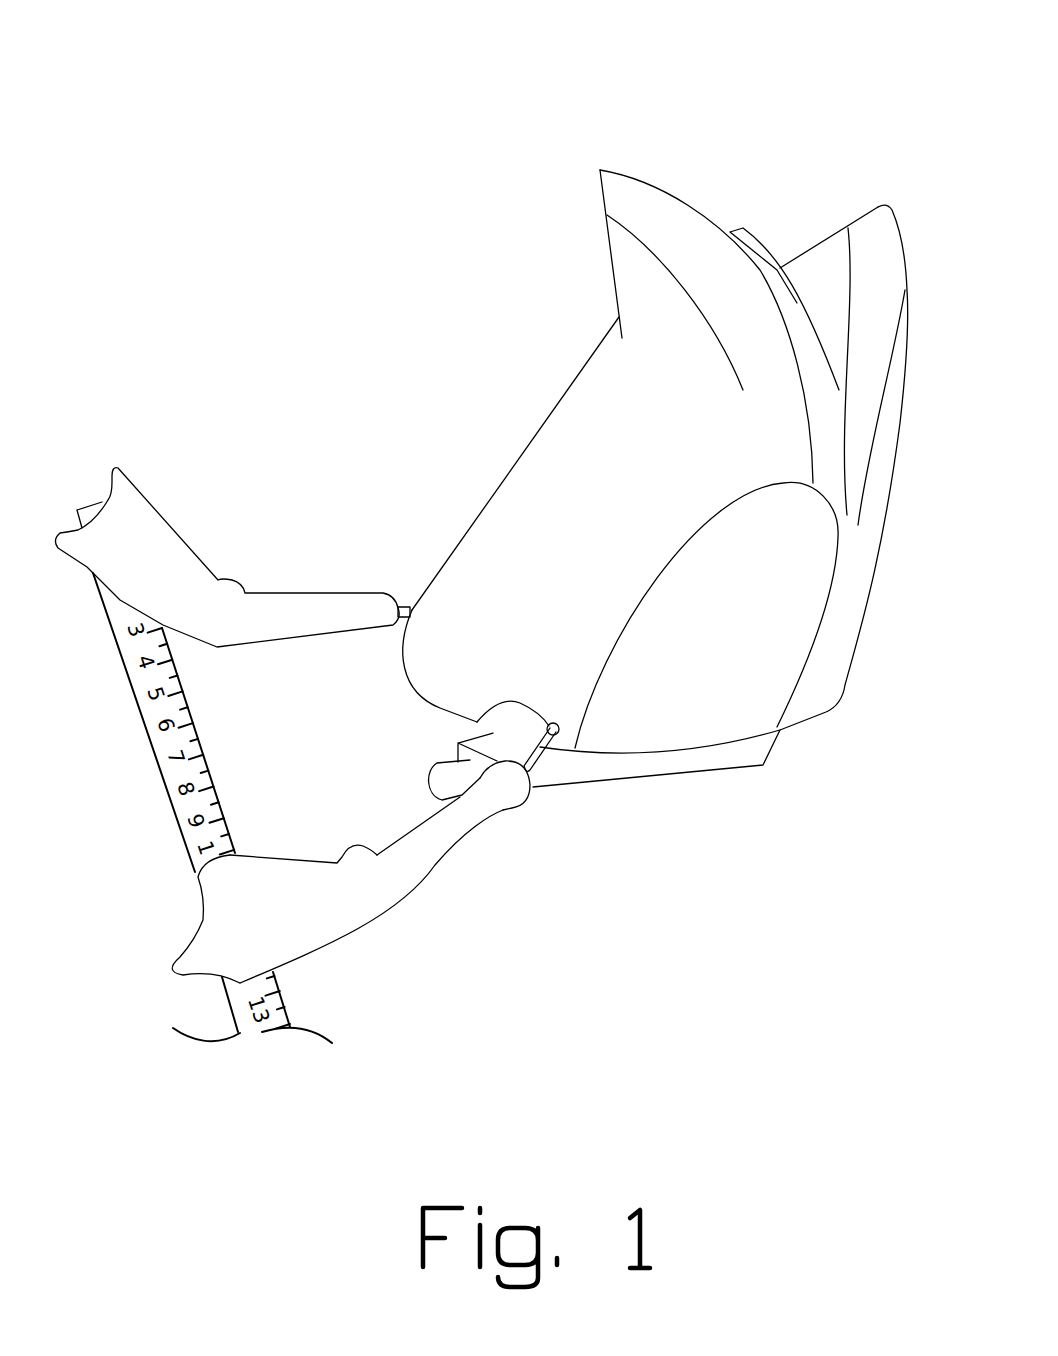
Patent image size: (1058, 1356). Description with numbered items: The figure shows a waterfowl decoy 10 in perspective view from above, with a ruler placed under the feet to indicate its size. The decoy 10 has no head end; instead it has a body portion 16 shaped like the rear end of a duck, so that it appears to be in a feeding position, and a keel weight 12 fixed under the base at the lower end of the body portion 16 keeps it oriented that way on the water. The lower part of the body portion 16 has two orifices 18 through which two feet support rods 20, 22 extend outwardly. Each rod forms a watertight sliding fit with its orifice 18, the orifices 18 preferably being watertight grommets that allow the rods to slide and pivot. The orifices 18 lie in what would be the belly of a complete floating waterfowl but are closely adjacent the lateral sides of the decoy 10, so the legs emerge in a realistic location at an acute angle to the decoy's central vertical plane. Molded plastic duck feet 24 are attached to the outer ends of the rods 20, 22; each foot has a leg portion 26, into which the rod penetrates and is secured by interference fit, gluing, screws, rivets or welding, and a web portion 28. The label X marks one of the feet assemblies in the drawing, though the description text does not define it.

The decoy 10 is at (787, 213).
The keel weight 12 is at (635, 793).
The body portion 16 is at (533, 437).
The orifices 18 is at (490, 710).
The feet support rod 20 is at (413, 602).
The feet support rod 22 is at (540, 750).
The duck feet 24 is at (332, 843).
The leg portions 26 is at (442, 842).
The web portions 28 is at (302, 927).
The arm X is at (218, 565).